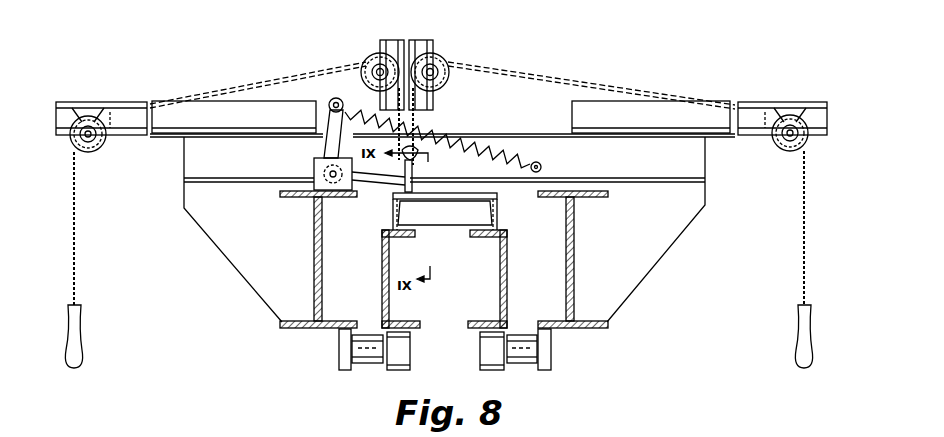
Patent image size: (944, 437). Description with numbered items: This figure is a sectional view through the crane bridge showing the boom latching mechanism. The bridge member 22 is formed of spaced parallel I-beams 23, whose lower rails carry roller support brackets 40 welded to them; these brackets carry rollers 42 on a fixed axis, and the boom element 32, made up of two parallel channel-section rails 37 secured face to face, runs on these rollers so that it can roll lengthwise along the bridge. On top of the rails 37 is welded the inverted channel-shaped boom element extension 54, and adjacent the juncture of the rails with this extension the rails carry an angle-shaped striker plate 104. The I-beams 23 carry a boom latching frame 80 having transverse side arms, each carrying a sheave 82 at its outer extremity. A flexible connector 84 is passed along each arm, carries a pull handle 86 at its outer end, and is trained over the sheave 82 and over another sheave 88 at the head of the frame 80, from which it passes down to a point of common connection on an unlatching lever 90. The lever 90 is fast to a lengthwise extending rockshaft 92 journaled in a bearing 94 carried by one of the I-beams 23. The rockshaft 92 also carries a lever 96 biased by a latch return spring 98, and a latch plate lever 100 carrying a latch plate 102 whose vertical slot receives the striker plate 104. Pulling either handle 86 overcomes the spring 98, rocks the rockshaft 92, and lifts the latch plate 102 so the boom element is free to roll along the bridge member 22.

The bridge member 22 is at (286, 333).
The I-beams 23 is at (312, 250).
The boom element 32 is at (445, 279).
The rails 37 is at (381, 264).
The roller support brackets 40 is at (344, 364).
The rollers 42 is at (490, 346).
The boom element extension 54 is at (465, 228).
The boom latching frame 80 is at (432, 56).
The sheave 82 is at (102, 148).
The flexible connector 84 is at (276, 78).
The pull handle 86 is at (84, 350).
The sheave 88 is at (377, 56).
The unlatching lever 90 is at (418, 152).
The rockshaft 92 is at (312, 165).
The bearing 94 is at (332, 158).
The lever 96 is at (334, 98).
The latch return spring 98 is at (444, 134).
The latch plate lever 100 is at (366, 190).
The latch plate 102 is at (402, 186).
The striker plate 104 is at (452, 214).